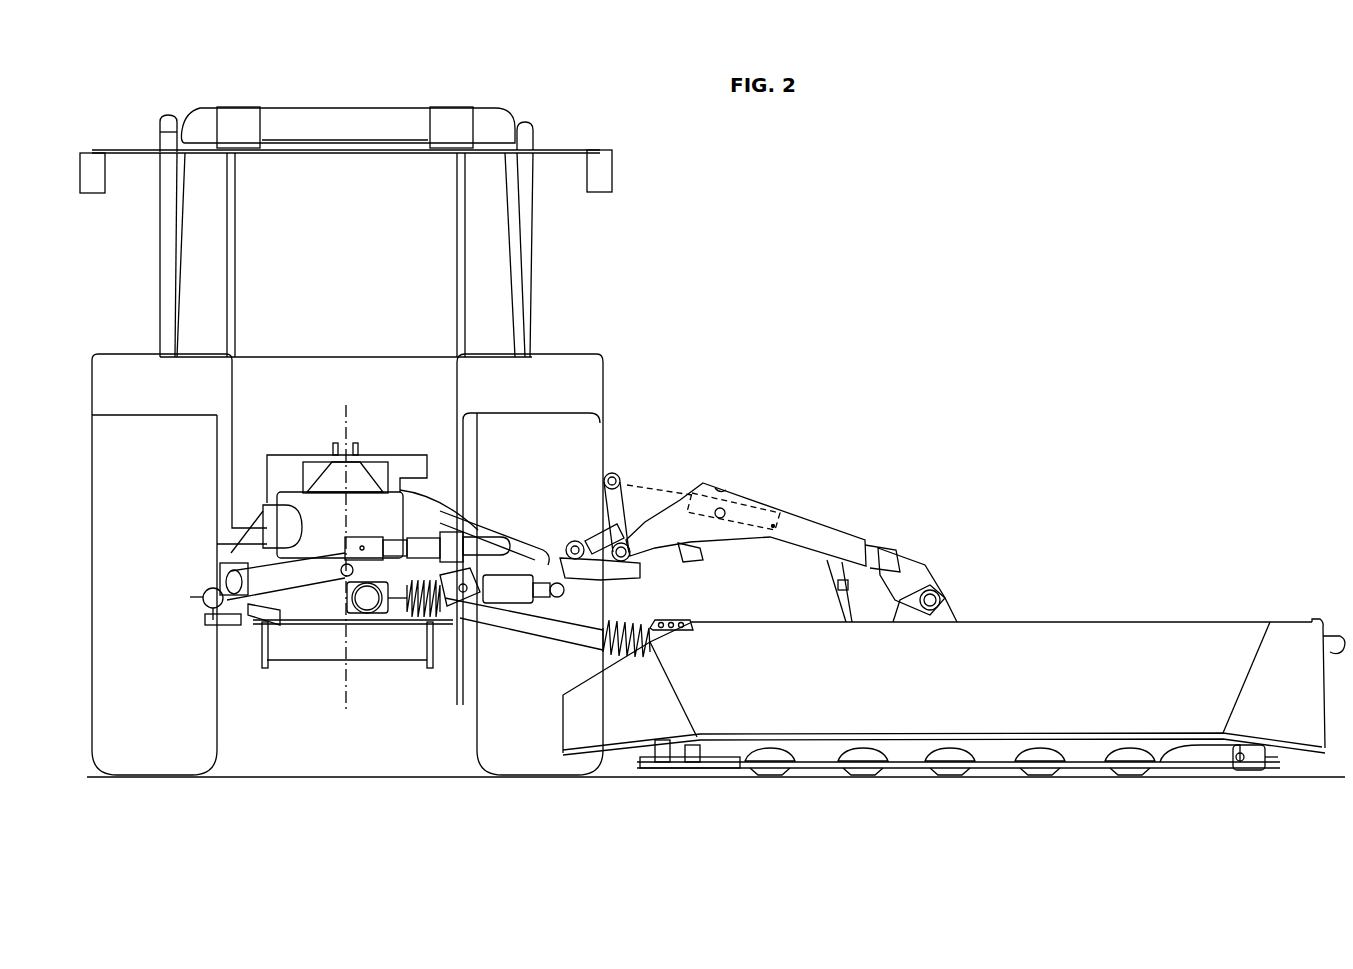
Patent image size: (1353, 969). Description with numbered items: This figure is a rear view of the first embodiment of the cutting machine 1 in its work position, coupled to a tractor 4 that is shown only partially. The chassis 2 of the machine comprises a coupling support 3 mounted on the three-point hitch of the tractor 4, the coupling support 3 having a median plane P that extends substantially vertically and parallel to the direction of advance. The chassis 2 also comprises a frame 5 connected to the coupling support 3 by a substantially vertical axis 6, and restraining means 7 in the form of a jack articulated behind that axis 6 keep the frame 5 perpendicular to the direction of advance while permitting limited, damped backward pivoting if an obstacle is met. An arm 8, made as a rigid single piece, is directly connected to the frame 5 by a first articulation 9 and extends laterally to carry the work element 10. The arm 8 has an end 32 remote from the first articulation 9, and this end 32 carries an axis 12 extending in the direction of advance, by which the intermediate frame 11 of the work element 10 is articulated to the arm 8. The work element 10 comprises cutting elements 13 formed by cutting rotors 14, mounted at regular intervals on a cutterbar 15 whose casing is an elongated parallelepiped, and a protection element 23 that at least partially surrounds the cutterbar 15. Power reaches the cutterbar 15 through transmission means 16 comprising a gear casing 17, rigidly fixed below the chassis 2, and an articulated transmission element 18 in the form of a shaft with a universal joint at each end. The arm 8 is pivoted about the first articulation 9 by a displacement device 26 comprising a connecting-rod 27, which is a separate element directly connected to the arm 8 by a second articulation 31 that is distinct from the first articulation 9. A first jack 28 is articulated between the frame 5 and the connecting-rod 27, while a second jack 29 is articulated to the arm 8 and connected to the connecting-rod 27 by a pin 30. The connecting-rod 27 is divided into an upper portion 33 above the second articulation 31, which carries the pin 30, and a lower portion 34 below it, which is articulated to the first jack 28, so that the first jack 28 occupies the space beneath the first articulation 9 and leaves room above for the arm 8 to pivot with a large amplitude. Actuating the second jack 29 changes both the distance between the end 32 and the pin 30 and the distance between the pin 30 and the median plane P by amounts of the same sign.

The cutting machine 1 is at (954, 631).
The chassis 2 is at (346, 441).
The coupling support 3 is at (430, 497).
The tractor 4 is at (497, 290).
The frame 5 is at (533, 563).
The axis 6 is at (407, 466).
The restraining means 7 is at (430, 562).
The arm 8 is at (843, 540).
The first articulation 9 is at (567, 542).
The work element 10 is at (603, 808).
The intermediate frame 11 is at (952, 618).
The axis 12 is at (940, 597).
The cutting elements 13 is at (1262, 775).
The cutting rotors 14 is at (1038, 758).
The cutterbar 15 is at (958, 790).
The transmission means 16 is at (472, 623).
The gear casing 17 is at (366, 613).
The articulated transmission element 18 is at (545, 627).
The protection element 23 is at (1172, 618).
The displacement device 26 is at (768, 509).
The connecting-rod 27 is at (607, 573).
The first jack 28 is at (513, 605).
The second jack 29 is at (760, 517).
The pin 30 is at (613, 472).
The second articulation 31 is at (640, 567).
The end 32 is at (921, 575).
The upper portion 33 is at (610, 500).
The lower portion 34 is at (596, 610).
The median plane P is at (343, 690).